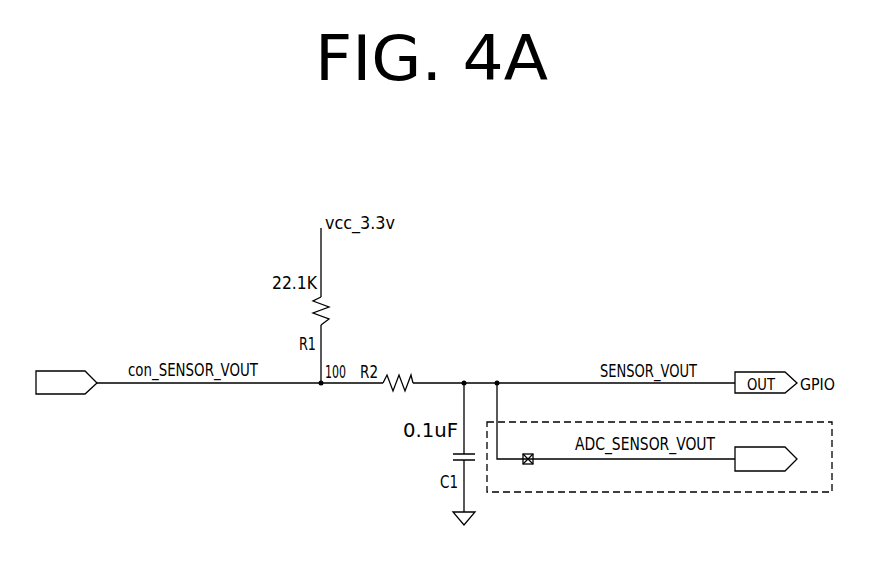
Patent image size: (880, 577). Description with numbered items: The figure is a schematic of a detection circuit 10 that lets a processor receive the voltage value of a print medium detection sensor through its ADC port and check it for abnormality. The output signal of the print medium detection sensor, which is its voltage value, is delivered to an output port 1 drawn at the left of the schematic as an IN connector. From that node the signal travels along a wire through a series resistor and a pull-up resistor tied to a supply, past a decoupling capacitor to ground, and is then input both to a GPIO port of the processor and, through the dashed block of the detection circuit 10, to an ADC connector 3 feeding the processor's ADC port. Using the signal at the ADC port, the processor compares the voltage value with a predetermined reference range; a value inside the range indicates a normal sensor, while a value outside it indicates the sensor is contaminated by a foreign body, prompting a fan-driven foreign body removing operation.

The output port 1 is at (58, 394).
The ADC output connector 3 is at (760, 472).
The detection circuit 10 is at (573, 492).